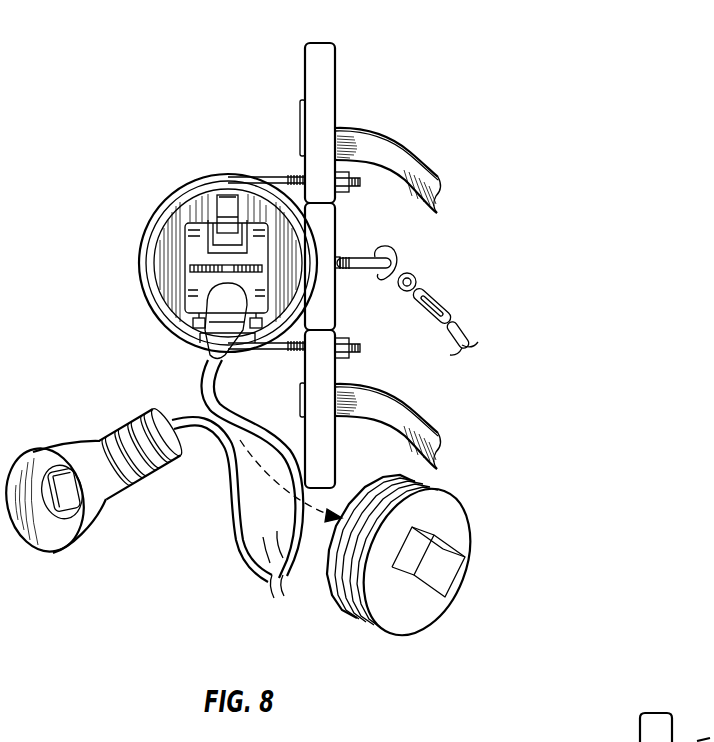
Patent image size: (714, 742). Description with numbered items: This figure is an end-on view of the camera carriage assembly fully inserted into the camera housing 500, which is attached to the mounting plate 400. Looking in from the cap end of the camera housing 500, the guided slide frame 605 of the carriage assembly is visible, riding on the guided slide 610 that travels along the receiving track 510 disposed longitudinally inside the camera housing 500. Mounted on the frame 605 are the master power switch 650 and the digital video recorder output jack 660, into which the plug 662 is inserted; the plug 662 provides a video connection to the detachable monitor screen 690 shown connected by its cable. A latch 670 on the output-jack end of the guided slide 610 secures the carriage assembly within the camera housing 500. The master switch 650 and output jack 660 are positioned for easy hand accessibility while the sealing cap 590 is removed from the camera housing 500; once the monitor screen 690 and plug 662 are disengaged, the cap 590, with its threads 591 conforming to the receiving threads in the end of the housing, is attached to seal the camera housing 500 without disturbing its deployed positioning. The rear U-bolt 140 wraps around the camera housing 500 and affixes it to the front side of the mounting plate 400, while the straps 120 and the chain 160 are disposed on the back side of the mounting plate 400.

The mounting plate 400 is at (332, 77).
The straps 120 is at (408, 157).
The chain 160 is at (438, 294).
The camera housing 500 is at (212, 177).
The rear U-bolt 140 is at (280, 178).
The receiving track 510 is at (258, 343).
The guided slide frame 605 is at (192, 245).
The master power switch 650 is at (220, 210).
The digital video recorder output jack 660 is at (193, 270).
The plug 662 is at (213, 307).
The guided slide 610 is at (209, 346).
The latch 670 is at (231, 358).
The detachable monitor screen 690 is at (97, 442).
The sealing cap 590 is at (376, 578).
The threads 591 is at (343, 594).